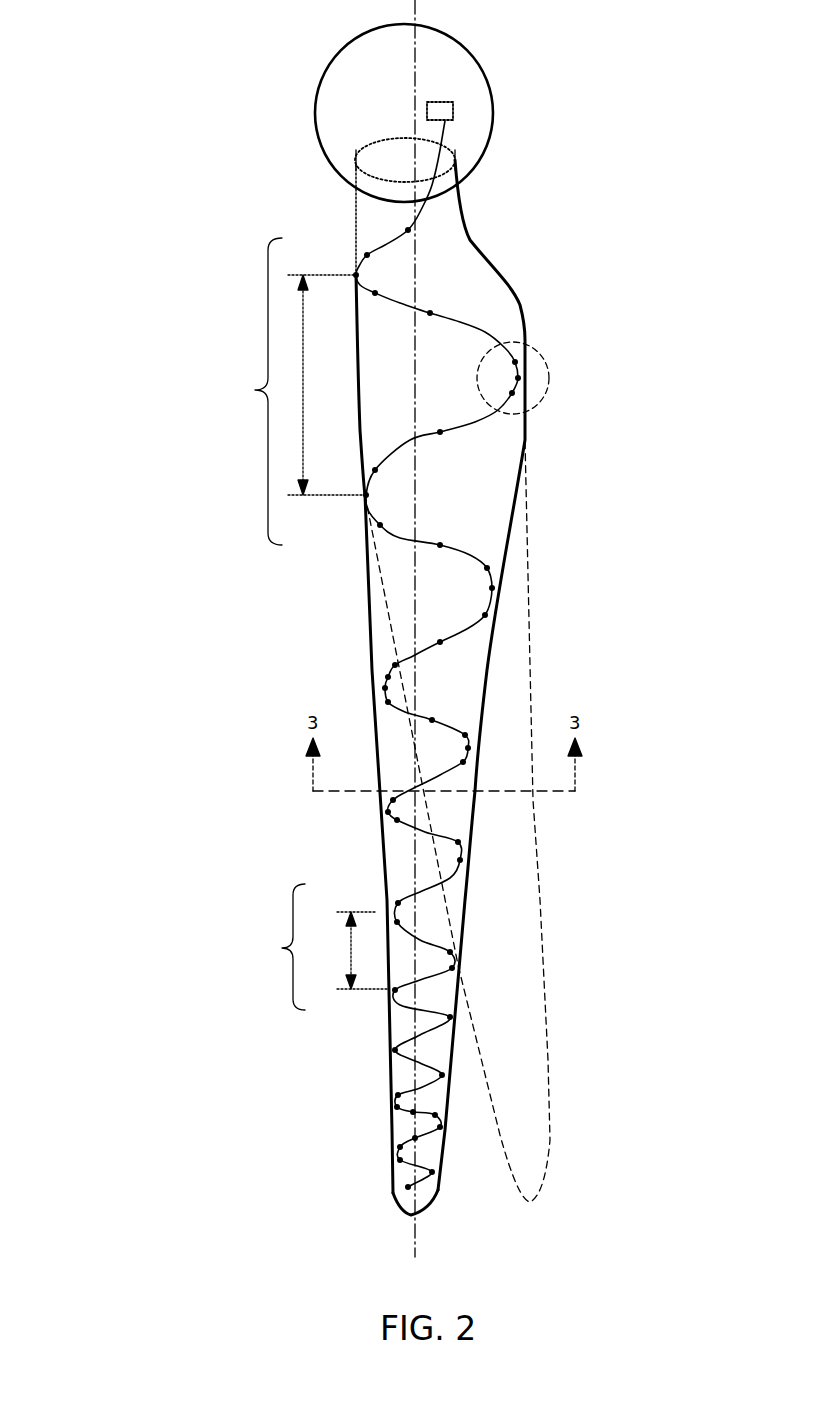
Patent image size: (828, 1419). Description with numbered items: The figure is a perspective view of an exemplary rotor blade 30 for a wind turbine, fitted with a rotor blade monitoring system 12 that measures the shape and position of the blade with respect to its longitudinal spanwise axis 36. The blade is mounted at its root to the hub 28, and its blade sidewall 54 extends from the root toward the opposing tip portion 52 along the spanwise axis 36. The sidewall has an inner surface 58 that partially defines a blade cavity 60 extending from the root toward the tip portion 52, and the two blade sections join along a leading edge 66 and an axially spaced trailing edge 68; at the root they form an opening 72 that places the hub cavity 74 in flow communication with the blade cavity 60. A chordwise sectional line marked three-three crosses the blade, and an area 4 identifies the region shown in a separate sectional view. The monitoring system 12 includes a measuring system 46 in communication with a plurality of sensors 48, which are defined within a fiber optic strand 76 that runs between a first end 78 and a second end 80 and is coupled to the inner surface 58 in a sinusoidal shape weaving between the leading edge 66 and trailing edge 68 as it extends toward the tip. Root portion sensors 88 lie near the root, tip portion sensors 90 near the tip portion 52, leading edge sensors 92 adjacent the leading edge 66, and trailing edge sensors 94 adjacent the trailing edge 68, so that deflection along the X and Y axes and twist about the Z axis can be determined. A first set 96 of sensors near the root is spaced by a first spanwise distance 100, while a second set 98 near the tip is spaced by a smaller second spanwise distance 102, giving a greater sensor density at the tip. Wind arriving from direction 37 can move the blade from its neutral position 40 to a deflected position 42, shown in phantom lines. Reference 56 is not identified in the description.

The area 4 is at (550, 362).
The rotor blade monitoring system 12 is at (622, 128).
The hub 28 is at (480, 52).
The rotor blade 30 is at (173, 104).
The spanwise axis 36 is at (418, 1222).
The direction 37 is at (228, 690).
The neutral position 40 is at (350, 1097).
The deflected position 42 is at (598, 1105).
The measuring system 46 is at (453, 103).
The sensors 48 is at (367, 255).
The tip portion 52 is at (302, 1035).
The blade sidewall 54 is at (485, 485).
The root region 56 is at (550, 242).
The inner surface 58 is at (373, 158).
The blade cavity 60 is at (400, 158).
The leading edge 66 is at (370, 605).
The trailing edge 68 is at (497, 622).
The opening 72 is at (457, 134).
The hub cavity 74 is at (355, 68).
The fiber optic strand 76 is at (487, 332).
The first end 78 is at (455, 202).
The second end 80 is at (468, 641).
The root portion sensors 88 is at (408, 230).
The tip portion sensors 90 is at (440, 1112).
The leading edge sensors 92 is at (356, 275).
The trailing edge sensors 94 is at (390, 895).
The first set 96 is at (252, 391).
The second set 98 is at (282, 947).
The first spanwise distance 100 is at (305, 358).
The second spanwise distance 102 is at (351, 950).